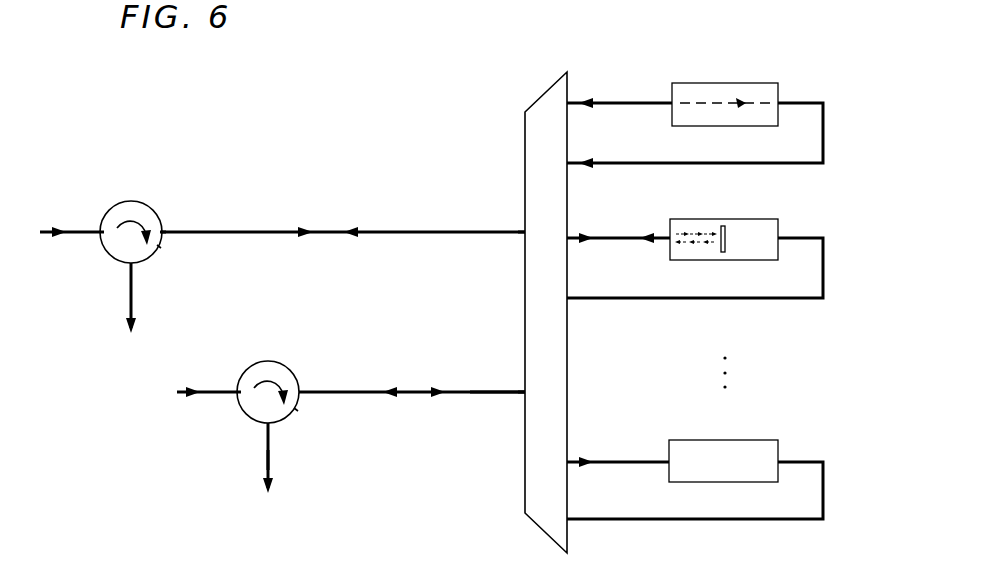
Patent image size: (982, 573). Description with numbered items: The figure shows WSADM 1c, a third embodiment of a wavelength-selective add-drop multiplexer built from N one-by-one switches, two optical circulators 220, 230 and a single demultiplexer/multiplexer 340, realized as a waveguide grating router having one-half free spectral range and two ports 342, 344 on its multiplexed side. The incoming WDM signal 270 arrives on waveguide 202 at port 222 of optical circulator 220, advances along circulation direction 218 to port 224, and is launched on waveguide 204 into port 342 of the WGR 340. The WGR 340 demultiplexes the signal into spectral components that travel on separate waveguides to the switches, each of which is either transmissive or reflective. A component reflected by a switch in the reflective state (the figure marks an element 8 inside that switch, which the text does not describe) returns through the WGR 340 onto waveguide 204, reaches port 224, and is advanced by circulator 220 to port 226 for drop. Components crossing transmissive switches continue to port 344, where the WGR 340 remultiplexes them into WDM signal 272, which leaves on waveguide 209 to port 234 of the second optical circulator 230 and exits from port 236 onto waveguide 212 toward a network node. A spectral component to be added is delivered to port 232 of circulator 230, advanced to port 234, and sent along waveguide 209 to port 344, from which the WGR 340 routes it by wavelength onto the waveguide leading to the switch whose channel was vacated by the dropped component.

The wavelength-selective add-drop multiplexer (WSADM) 1c is at (514, 46).
The waveguide 202 is at (80, 240).
The waveguide 204 is at (240, 230).
The waveguide 209 is at (486, 388).
The waveguide 212 is at (270, 460).
The circulation direction 218 is at (150, 212).
The optical circulator 220 is at (126, 202).
The port 222 is at (101, 218).
The port 224 is at (163, 243).
The port 226 is at (126, 264).
The optical circulator 230 is at (284, 364).
The port 232 is at (240, 378).
The port 234 is at (302, 404).
The port 236 is at (264, 424).
The WDM signal 270 is at (58, 228).
The WDM signal 272 is at (390, 388).
The demultiplexer/multiplexer 340 is at (563, 296).
The port 342 is at (523, 231).
The port 344 is at (522, 396).
The mirror 8 is at (722, 228).